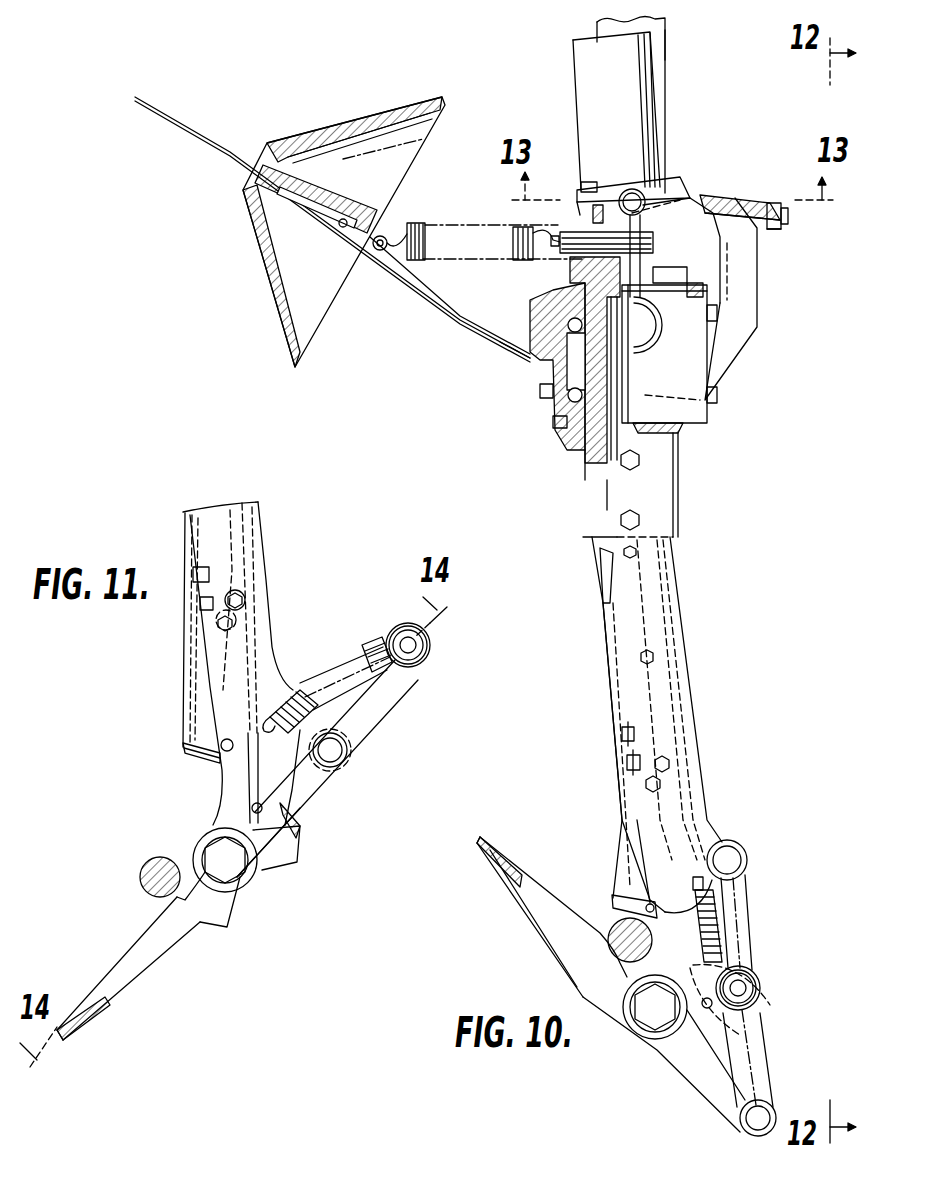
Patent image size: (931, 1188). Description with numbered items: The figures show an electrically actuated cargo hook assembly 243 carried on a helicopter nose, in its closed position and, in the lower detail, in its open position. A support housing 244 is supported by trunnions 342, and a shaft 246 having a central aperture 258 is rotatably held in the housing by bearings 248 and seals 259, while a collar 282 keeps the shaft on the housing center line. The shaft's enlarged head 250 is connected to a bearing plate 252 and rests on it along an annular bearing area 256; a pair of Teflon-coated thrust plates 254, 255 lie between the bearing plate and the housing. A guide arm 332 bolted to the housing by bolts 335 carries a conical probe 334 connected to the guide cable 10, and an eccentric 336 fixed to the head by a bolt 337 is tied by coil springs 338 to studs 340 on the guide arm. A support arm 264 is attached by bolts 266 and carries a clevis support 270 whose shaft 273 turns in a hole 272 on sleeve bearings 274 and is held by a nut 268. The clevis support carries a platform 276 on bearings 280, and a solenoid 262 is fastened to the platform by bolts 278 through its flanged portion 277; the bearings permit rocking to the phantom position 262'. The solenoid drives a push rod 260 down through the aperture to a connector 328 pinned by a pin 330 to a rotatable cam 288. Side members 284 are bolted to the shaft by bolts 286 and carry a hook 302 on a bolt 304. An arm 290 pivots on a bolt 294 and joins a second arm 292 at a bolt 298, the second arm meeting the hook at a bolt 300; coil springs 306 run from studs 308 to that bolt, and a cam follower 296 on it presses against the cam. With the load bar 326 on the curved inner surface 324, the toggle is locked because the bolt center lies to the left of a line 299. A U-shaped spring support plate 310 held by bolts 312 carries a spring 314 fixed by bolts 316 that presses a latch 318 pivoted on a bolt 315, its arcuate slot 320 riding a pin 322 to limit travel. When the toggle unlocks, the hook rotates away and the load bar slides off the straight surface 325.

In FIG. 10, the guide cable 10 is at (204, 132).
In FIG. 10, the cargo hook assembly 243 is at (584, 530).
In FIG. 10, the support housing 244 is at (553, 423).
In FIG. 10, the shaft 246 is at (584, 464).
In FIG. 10, the bearings 248 is at (566, 395).
In FIG. 10, the enlarged head 250 is at (513, 246).
In FIG. 10, the bearing plate 252 is at (425, 252).
In FIG. 10, the thrust plate 254 is at (507, 337).
In FIG. 10, the thrust plate 255 is at (530, 313).
In FIG. 10, the annular bearing area 256 is at (585, 271).
In FIG. 10, the central aperture 258 is at (598, 491).
In FIG. 10, the seals 259 is at (532, 301).
In FIG. 10, the push rod 260 is at (710, 410).
In FIG. 11, the push rod 260 is at (262, 538).
In FIG. 10, the solenoid 262 is at (654, 105).
In FIG. 10, the solenoid rocked position 262' is at (703, 47).
In FIG. 10, the support arm 264 is at (750, 283).
In FIG. 10, the bolts 266 is at (718, 393).
In FIG. 10, the nut 268 is at (777, 240).
In FIG. 10, the clevis support 270 is at (693, 195).
In FIG. 10, the hole 272 is at (727, 194).
In FIG. 10, the shaft 273 is at (742, 199).
In FIG. 10, the sleeve bearings 274 is at (770, 202).
In FIG. 10, the platform 276 is at (603, 190).
In FIG. 10, the flanged portion 277 is at (577, 197).
In FIG. 10, the bolts 278 is at (584, 182).
In FIG. 10, the bearings 280 is at (633, 191).
In FIG. 10, the collar 282 is at (686, 431).
In FIG. 10, the side members 284 is at (678, 558).
In FIG. 10, the bolts 286 is at (643, 464).
In FIG. 10, the cam 288 is at (748, 1024).
In FIG. 11, the cam 288 is at (292, 859).
In FIG. 10, the arm 290 is at (753, 900).
In FIG. 11, the arm 290 is at (327, 682).
In FIG. 10, the second arm 292 is at (772, 1070).
In FIG. 11, the second arm 292 is at (367, 690).
In FIG. 10, the bolt 294 is at (747, 857).
In FIG. 11, the bolt 294 is at (297, 688).
In FIG. 10, the cam follower 296 is at (757, 975).
In FIG. 11, the cam follower 296 is at (427, 663).
In FIG. 10, the bolt 298 is at (761, 988).
In FIG. 11, the bolt 298 is at (430, 645).
In FIG. 10, the line 299 is at (722, 833).
In FIG. 10, the bolt 300 is at (770, 1108).
In FIG. 11, the bolt 300 is at (347, 751).
In FIG. 10, the hook 302 is at (640, 1037).
In FIG. 11, the hook 302 is at (312, 797).
In FIG. 10, the bolt 304 is at (656, 1041).
In FIG. 11, the bolt 304 is at (240, 885).
In FIG. 10, the coil springs 306 is at (720, 946).
In FIG. 11, the coil springs 306 is at (367, 647).
In FIG. 10, the studs 308 is at (705, 883).
In FIG. 10, the spring support plate 310 is at (606, 566).
In FIG. 10, the bolts 312 is at (655, 656).
In FIG. 10, the spring 314 is at (627, 765).
In FIG. 11, the spring 314 is at (192, 687).
In FIG. 10, the bolt 315 is at (646, 787).
In FIG. 10, the bolts 316 is at (622, 735).
In FIG. 10, the latch 318 is at (618, 837).
In FIG. 11, the latch 318 is at (195, 689).
In FIG. 10, the arcuate slot 320 is at (613, 897).
In FIG. 11, the arcuate slot 320 is at (185, 746).
In FIG. 10, the pin 322 is at (646, 904).
In FIG. 11, the pin 322 is at (224, 752).
In FIG. 10, the curved inner surface 324 is at (600, 956).
In FIG. 11, the curved inner surface 324 is at (205, 931).
In FIG. 11, the straight surface 325 is at (122, 951).
In FIG. 10, the load bar 326 is at (617, 935).
In FIG. 11, the load bar 326 is at (140, 880).
In FIG. 10, the connector 328 is at (655, 1007).
In FIG. 11, the connector 328 is at (215, 831).
In FIG. 10, the pin 330 is at (713, 1005).
In FIG. 11, the pin 330 is at (265, 814).
In FIG. 10, the guide arm 332 is at (361, 262).
In FIG. 10, the conical probe 334 is at (350, 126).
In FIG. 10, the bolts 335 is at (540, 389).
In FIG. 10, the eccentric 336 is at (491, 213).
In FIG. 10, the bolt 337 is at (596, 209).
In FIG. 10, the coil springs 338 is at (412, 223).
In FIG. 10, the studs 340 is at (355, 257).
In FIG. 10, the trunnions 342 is at (665, 343).